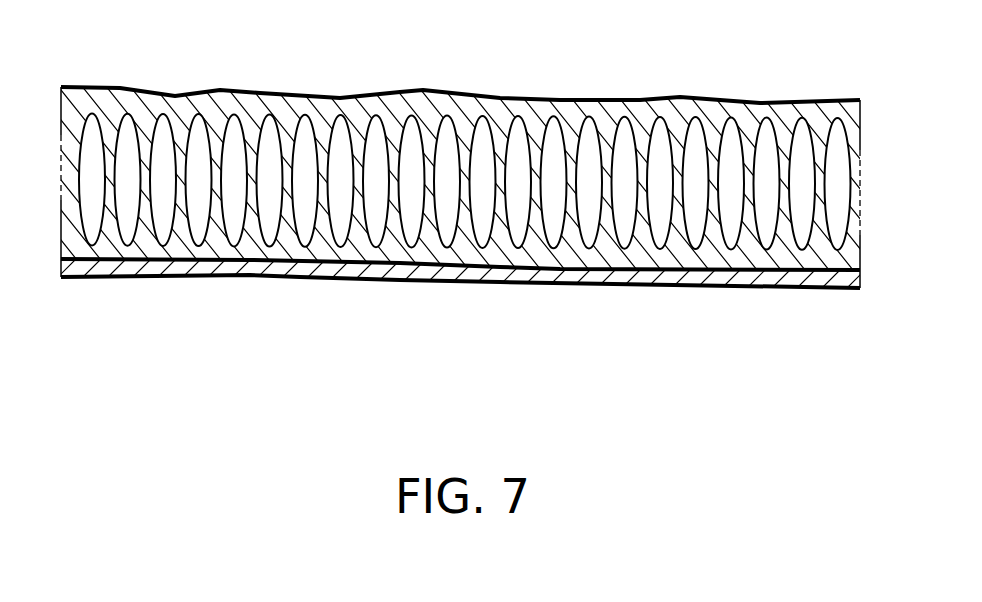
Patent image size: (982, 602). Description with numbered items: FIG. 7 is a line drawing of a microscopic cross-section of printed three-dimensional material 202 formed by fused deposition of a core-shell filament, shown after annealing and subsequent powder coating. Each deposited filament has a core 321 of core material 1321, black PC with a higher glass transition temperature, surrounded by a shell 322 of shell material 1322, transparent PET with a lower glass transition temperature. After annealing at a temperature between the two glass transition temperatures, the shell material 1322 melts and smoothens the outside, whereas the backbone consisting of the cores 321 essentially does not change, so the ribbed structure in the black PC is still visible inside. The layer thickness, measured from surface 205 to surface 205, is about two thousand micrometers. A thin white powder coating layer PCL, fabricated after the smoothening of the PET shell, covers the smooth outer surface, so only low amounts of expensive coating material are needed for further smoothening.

The printed 3D material 202 is at (677, 78).
The surface 205 is at (247, 88).
The core 321 is at (465, 146).
The core material 1321 is at (590, 140).
The shell 322 is at (491, 181).
The shell material 1322 is at (112, 108).
The powder coating layer PCL is at (423, 90).